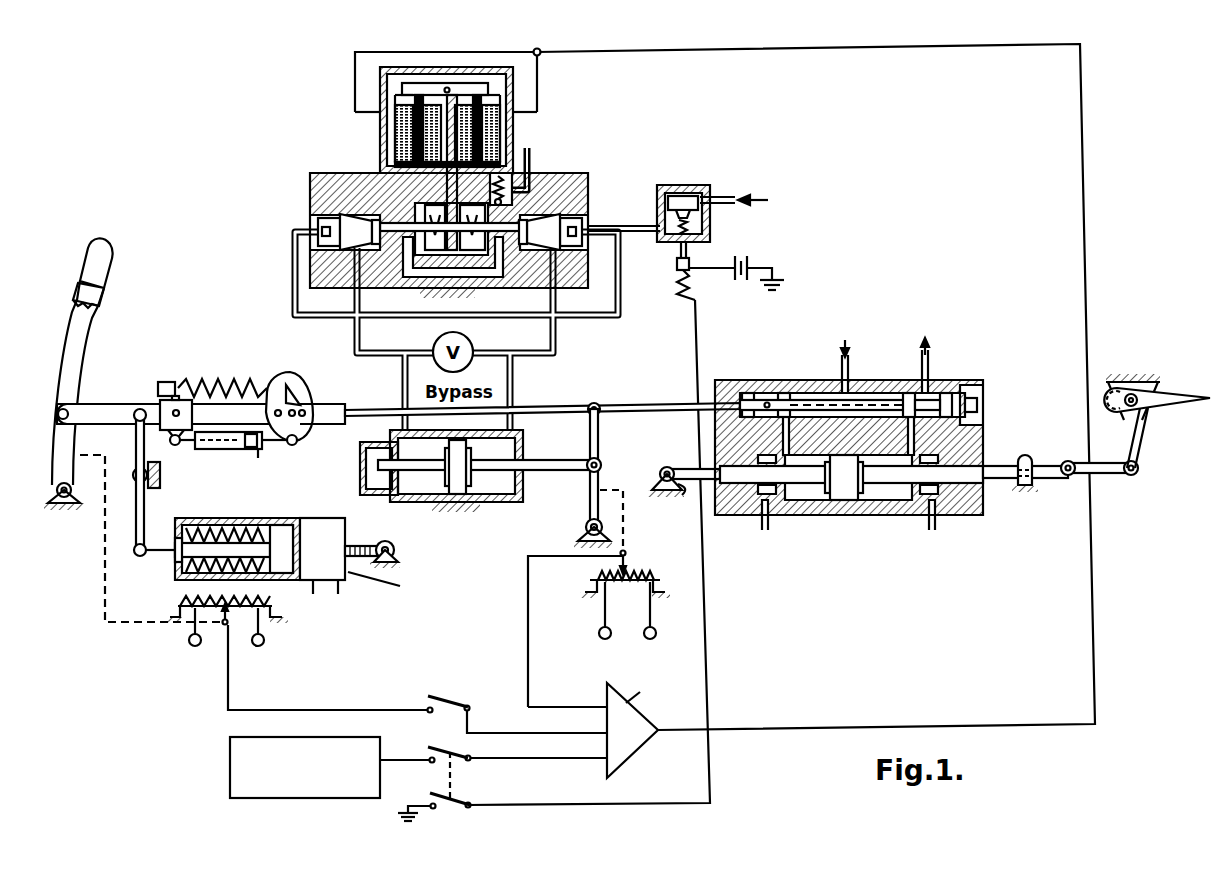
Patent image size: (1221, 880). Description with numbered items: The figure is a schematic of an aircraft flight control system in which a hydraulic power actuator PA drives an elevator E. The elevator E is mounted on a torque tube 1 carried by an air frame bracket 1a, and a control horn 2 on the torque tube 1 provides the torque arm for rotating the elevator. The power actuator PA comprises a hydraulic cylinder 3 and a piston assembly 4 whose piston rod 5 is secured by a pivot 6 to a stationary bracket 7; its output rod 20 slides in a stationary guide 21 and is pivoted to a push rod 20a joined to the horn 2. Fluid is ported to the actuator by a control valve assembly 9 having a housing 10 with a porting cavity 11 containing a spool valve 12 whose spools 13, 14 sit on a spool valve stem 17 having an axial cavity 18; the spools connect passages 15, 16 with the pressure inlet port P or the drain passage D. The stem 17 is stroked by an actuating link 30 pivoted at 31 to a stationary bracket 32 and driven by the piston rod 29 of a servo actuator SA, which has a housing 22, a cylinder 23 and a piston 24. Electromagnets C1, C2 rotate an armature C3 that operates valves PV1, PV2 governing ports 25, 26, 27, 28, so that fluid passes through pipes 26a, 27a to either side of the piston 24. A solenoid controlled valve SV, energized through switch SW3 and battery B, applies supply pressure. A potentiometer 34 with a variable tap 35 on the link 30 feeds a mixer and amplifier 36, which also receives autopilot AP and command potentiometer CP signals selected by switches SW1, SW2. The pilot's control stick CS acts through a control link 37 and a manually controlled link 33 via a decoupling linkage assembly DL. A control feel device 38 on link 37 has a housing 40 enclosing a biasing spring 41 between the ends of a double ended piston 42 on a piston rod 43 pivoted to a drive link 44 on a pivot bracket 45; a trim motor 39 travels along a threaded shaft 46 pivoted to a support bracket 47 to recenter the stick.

The torque tube 1 is at (1142, 408).
The air frame bracket 1a is at (1155, 382).
The control horn 2 is at (1144, 447).
The hydraulic cylinder 3 is at (903, 505).
The piston assembly 4 is at (836, 492).
The piston rod 5 is at (696, 491).
The pivot 6 is at (670, 468).
The stationary bracket 7 is at (656, 486).
The control valve assembly 9 is at (1003, 387).
The housing 10 is at (740, 384).
The fluid porting cavity 11 is at (968, 390).
The spool valve 12 is at (978, 404).
The spool 13 is at (752, 393).
The spool 14 is at (908, 393).
The fluid passage 15 is at (788, 440).
The fluid passage 16 is at (911, 440).
The spool valve stem 17 is at (633, 405).
The axial cavity 18 is at (818, 390).
The rod 20 is at (1045, 465).
The push rod 20a is at (1110, 476).
The stationary guide 21 is at (1036, 482).
The housing 22 is at (506, 502).
The cylinder 23 is at (418, 500).
The piston 24 is at (462, 484).
The pressure port 25 is at (340, 247).
The outgoing pressure port 26 is at (370, 213).
The pipe 26a is at (401, 386).
The outgoing port 27 is at (540, 213).
The pipe 27a is at (514, 381).
The pressure port 28 is at (600, 250).
The piston rod 29 is at (532, 462).
The actuating link 30 is at (598, 448).
The pivot 31 is at (586, 521).
The stationary bracket 32 is at (578, 541).
The manually controlled link 33 is at (589, 405).
The potentiometer 34 is at (650, 573).
The variable tap 35 is at (626, 553).
The mixer and amplifier 36 is at (643, 747).
The control link 37 is at (308, 424).
The control feel device 38 is at (222, 535).
The trim motor 39 is at (318, 519).
The housing 40 is at (280, 522).
The biasing spring 41 is at (203, 526).
The double ended piston 42 is at (180, 548).
The piston rod 43 is at (174, 557).
The drive link 44 is at (146, 504).
The pivot bracket 45 is at (154, 470).
The threaded shaft 46 is at (362, 545).
The support bracket 47 is at (396, 556).
The autopilot system AP is at (230, 756).
The source battery B is at (745, 262).
The electromagnet C1 is at (395, 128).
The electromagnet C2 is at (500, 128).
The armature C3 is at (488, 90).
The command potentiometer CP is at (186, 604).
The control stick CS is at (85, 338).
The drain passage D is at (934, 358).
The decoupling linkage assembly DL is at (290, 383).
The elevator E is at (1172, 395).
The pressure inlet port P is at (852, 358).
The hydraulic power actuator PA is at (872, 514).
The valve PV1 is at (318, 218).
The valve PV2 is at (582, 220).
The servo actuator SA is at (625, 188).
The solenoid controlled valve SV is at (700, 188).
The switch SW1 is at (446, 702).
The switch SW2 is at (455, 763).
The switch SW3 is at (457, 808).